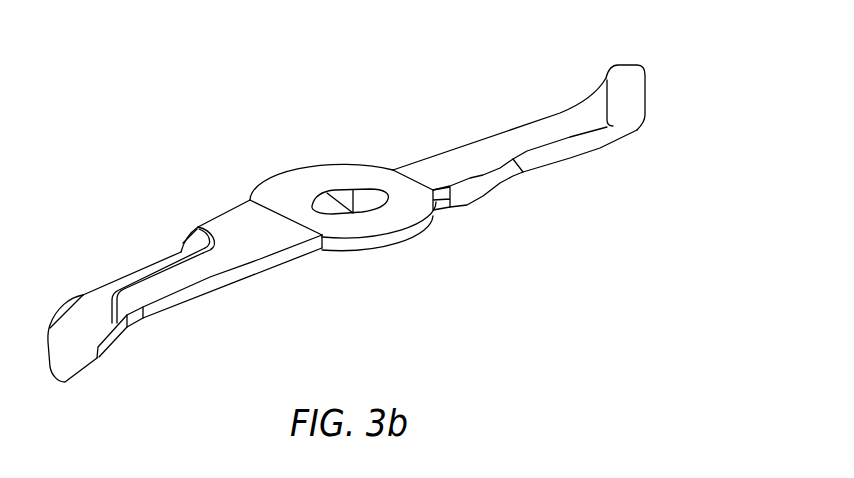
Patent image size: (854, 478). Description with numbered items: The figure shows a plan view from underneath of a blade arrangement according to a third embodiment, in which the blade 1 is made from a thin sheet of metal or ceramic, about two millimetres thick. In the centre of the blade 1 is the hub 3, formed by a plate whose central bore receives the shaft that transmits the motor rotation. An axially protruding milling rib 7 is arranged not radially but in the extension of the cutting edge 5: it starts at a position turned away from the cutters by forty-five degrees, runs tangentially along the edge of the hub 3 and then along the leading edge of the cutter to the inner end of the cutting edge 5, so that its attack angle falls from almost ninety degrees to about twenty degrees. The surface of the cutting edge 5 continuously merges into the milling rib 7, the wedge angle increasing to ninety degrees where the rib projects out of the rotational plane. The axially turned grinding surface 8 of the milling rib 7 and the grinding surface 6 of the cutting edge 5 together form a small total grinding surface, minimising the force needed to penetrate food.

The blade 1 is at (380, 203).
The hub 3 is at (295, 186).
The cutting edge 5 is at (553, 155).
The grinding surface 6 is at (623, 95).
The milling rib 7 is at (492, 215).
The grinding surface 8 is at (467, 183).